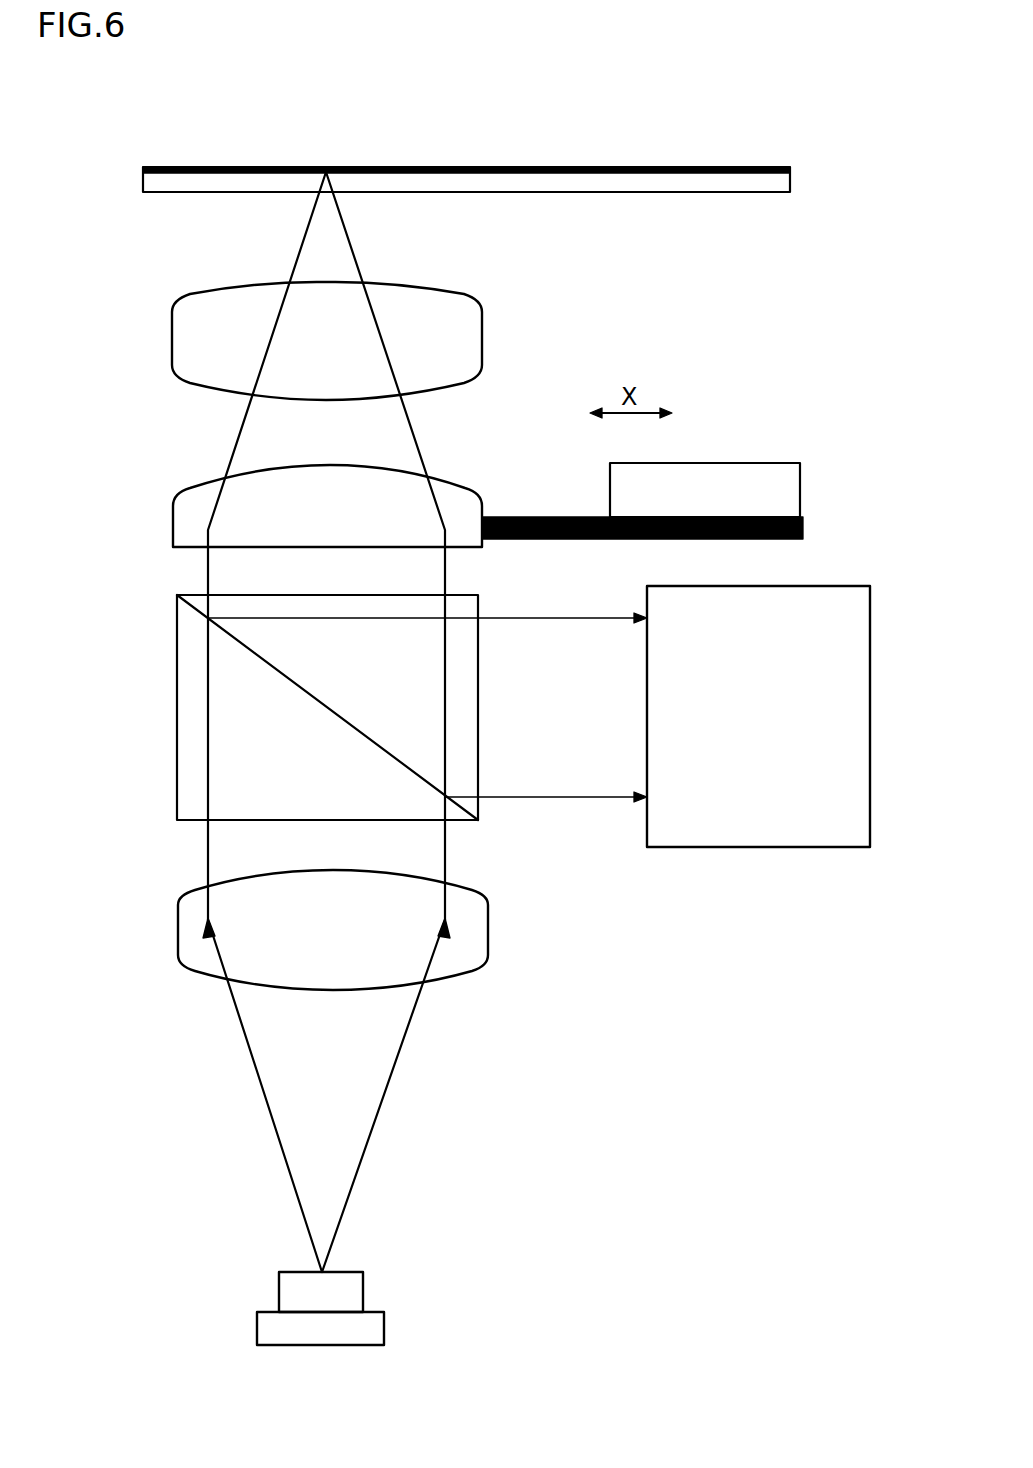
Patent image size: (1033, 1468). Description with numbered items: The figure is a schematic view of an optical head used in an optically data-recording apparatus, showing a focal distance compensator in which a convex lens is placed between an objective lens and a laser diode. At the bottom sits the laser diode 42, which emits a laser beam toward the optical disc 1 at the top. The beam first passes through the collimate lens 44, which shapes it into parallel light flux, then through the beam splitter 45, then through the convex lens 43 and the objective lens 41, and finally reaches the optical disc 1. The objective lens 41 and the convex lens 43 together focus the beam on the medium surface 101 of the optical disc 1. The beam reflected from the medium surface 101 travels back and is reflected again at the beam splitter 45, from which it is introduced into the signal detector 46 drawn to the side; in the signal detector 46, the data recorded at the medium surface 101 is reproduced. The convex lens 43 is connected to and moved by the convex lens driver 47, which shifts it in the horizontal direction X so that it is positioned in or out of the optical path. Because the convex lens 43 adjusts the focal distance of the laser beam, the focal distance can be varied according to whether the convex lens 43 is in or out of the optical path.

The optical disc 1 is at (790, 180).
The medium surface 101 is at (547, 167).
The objective lens 41 is at (482, 337).
The laser diode 42 is at (366, 1287).
The convex lens 43 is at (478, 490).
The collimate lens 44 is at (488, 945).
The beam splitter 45 is at (177, 627).
The signal detector 46 is at (822, 586).
The convex lens driver 47 is at (770, 463).